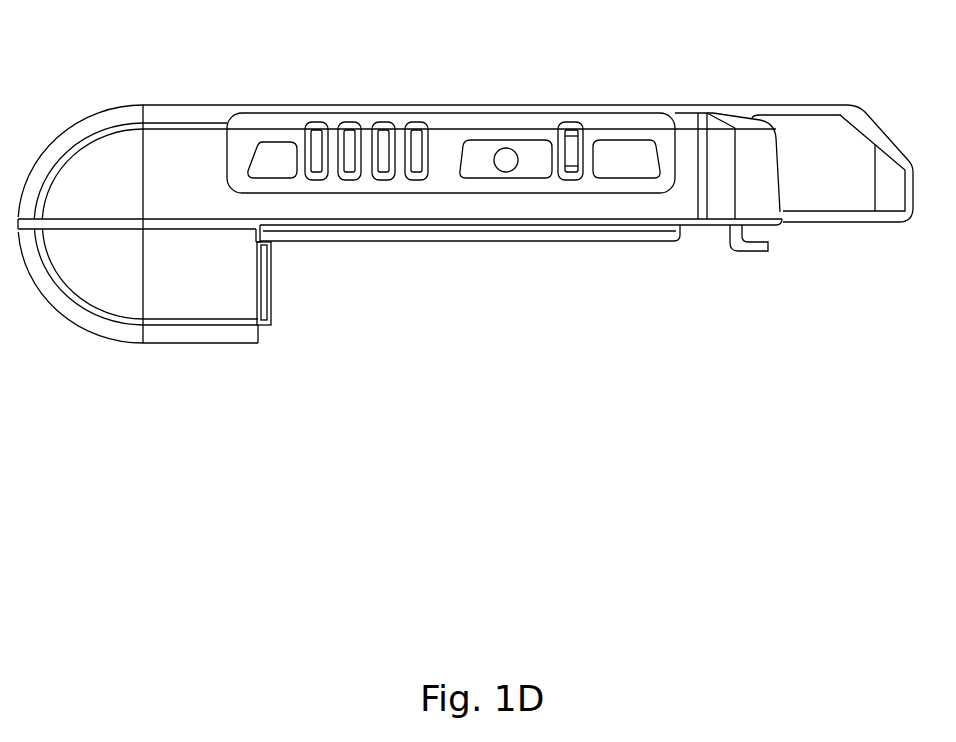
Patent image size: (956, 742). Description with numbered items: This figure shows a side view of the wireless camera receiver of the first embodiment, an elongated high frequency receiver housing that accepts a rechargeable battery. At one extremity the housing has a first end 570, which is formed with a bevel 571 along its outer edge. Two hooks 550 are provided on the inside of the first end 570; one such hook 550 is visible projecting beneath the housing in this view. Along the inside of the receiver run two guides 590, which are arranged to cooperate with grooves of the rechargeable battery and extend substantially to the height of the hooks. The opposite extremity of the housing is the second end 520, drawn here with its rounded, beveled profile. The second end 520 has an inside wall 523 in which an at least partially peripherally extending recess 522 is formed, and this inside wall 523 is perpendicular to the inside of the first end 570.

The second end 520 is at (80, 224).
The recess 522 is at (258, 333).
The inside wall 523 is at (271, 268).
The hook 550 is at (745, 253).
The first end 570 is at (828, 163).
The bevel 571 is at (871, 136).
The guide 590 is at (590, 232).